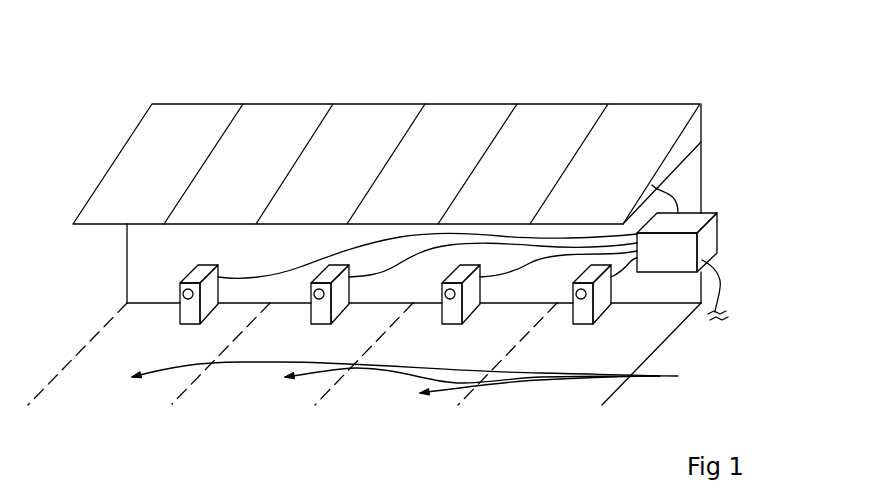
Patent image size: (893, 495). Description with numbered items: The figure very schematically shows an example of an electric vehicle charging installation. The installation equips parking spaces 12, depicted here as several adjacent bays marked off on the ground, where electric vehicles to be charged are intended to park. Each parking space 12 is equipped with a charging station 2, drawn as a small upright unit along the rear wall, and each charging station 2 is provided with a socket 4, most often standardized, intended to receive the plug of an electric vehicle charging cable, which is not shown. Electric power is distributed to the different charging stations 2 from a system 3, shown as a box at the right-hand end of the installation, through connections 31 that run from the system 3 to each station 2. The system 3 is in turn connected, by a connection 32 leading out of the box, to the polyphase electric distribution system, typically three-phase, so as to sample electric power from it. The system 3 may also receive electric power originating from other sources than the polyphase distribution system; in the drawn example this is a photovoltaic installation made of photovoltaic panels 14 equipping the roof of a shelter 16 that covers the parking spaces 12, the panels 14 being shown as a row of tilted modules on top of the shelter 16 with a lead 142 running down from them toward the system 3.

The charging station 2 is at (396, 311).
The system 3 is at (717, 233).
The socket 4 is at (365, 318).
The parking space 12 is at (416, 378).
The photovoltaic panel 14 is at (192, 127).
The shelter 16 is at (701, 193).
The connection 31 is at (437, 267).
The connection 32 is at (719, 284).
The panel cable 142 is at (667, 190).